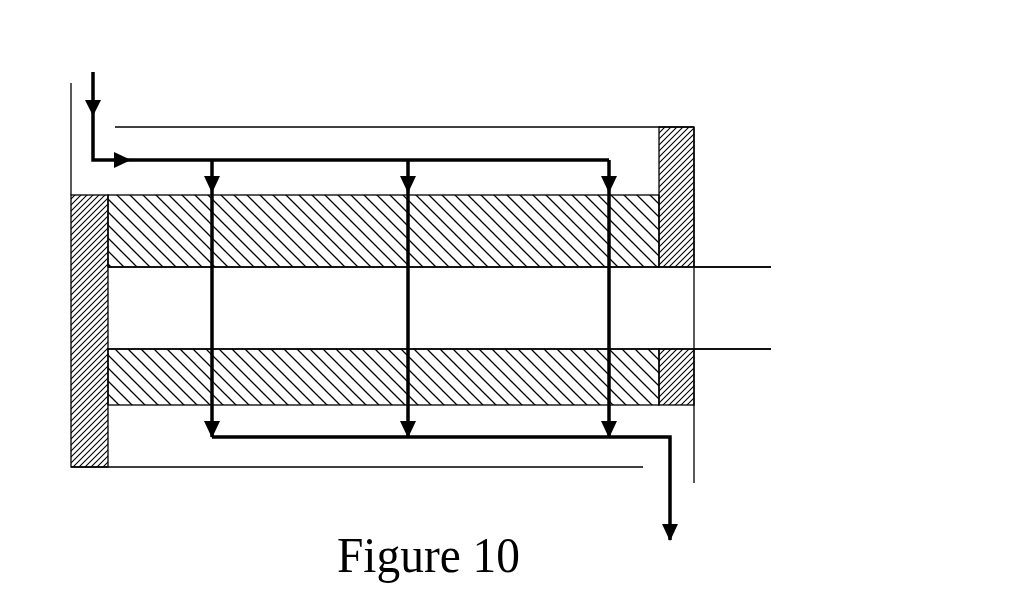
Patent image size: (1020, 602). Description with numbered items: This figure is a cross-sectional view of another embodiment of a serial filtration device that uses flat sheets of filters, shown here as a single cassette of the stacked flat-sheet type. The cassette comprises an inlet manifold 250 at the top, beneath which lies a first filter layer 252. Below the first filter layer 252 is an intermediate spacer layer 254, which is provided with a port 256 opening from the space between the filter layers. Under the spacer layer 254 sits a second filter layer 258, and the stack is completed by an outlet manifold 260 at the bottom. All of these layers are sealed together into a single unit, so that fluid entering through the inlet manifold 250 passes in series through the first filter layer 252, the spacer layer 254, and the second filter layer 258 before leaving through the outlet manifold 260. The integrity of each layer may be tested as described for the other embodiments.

The inlet manifold 250 is at (365, 145).
The first filter layer 252 is at (638, 212).
The intermediate spacer layer 254 is at (533, 310).
The port 256 is at (757, 309).
The second filter layer 258 is at (645, 375).
The outlet manifold 260 is at (672, 443).